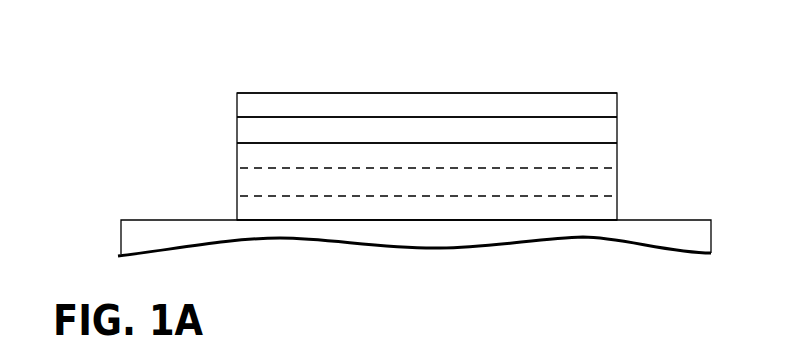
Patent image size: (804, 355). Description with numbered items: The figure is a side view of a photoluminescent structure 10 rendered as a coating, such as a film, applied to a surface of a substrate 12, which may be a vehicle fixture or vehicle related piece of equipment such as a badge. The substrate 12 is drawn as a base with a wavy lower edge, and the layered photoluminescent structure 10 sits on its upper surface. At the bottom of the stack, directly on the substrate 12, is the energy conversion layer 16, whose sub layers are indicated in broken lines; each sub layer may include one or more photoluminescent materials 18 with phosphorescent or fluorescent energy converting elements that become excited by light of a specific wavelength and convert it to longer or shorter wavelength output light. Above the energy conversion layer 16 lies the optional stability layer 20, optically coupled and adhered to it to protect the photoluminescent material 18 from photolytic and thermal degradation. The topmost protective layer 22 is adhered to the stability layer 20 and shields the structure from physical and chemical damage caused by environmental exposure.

The photoluminescent structure 10 is at (559, 69).
The substrate 12 is at (658, 219).
The energy conversion layer 16 is at (237, 180).
The photoluminescent material 18 is at (577, 182).
The stability layer 20 is at (237, 130).
The protective layer 22 is at (323, 92).